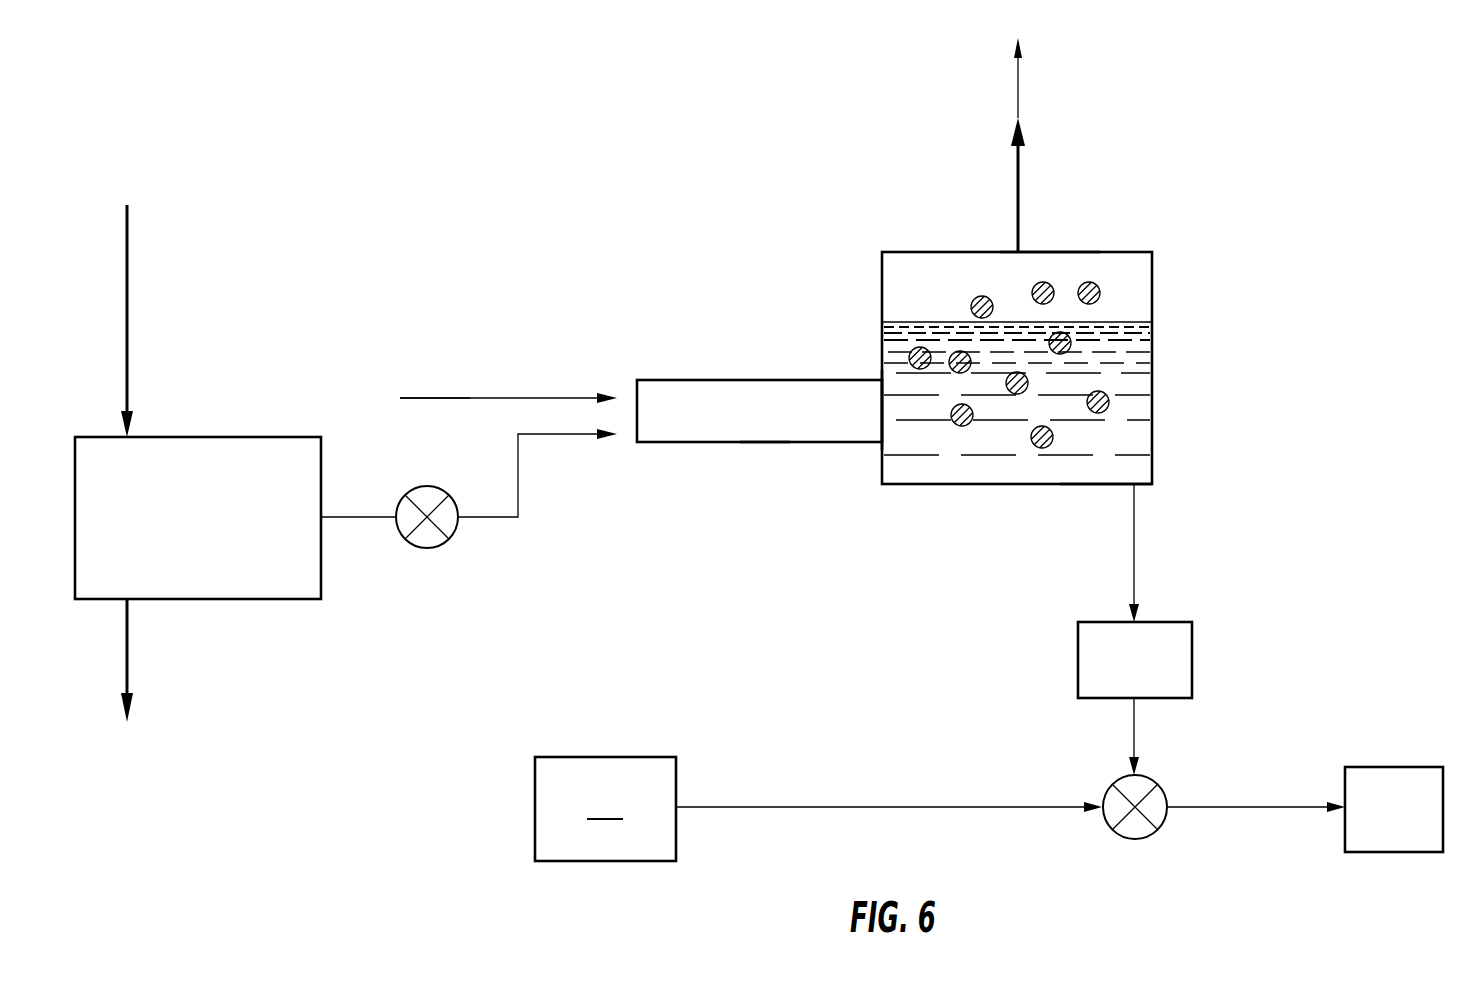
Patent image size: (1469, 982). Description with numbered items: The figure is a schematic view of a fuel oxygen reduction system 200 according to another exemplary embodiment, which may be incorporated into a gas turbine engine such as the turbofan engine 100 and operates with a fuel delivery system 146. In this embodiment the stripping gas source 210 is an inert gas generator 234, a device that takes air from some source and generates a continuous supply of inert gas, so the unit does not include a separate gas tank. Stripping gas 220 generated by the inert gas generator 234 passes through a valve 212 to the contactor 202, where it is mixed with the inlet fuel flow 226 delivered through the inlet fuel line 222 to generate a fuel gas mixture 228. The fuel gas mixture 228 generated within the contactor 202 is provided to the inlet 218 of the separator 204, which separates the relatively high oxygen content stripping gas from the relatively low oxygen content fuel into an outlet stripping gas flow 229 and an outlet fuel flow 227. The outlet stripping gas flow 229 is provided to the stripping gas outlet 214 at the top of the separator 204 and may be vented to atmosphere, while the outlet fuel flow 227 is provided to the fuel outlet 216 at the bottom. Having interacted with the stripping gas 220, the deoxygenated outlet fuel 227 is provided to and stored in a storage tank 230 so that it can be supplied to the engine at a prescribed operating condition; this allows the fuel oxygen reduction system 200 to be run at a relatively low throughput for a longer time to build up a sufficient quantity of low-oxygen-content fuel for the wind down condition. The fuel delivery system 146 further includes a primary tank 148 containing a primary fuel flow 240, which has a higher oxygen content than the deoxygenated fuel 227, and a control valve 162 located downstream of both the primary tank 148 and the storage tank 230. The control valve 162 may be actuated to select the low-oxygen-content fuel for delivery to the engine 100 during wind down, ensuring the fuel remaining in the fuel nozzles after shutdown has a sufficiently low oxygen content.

The turbofan engine 100 is at (1388, 767).
The fuel delivery system 146 is at (550, 904).
The primary tank 148 is at (605, 809).
The control valve 162 is at (1133, 843).
The fuel oxygen reduction system 200 is at (1238, 217).
The contactor 202 is at (722, 445).
The separator 204 is at (1152, 387).
The stripping gas source 210 is at (214, 600).
The valve 212 is at (430, 548).
The stripping gas outlet 214 is at (1073, 250).
The fuel outlet 216 is at (1108, 487).
The inlet 218 is at (880, 380).
The stripping gas 220 is at (553, 435).
The inlet fuel line 222 is at (533, 398).
The inlet fuel flow 226 is at (437, 398).
The outlet fuel flow 227 is at (1134, 570).
The fuel gas mixture 228 is at (765, 445).
The outlet stripping gas flow 229 is at (1018, 75).
The storage tank 230 is at (1192, 662).
The inert gas generator 234 is at (231, 437).
The primary fuel flow 240 is at (772, 808).